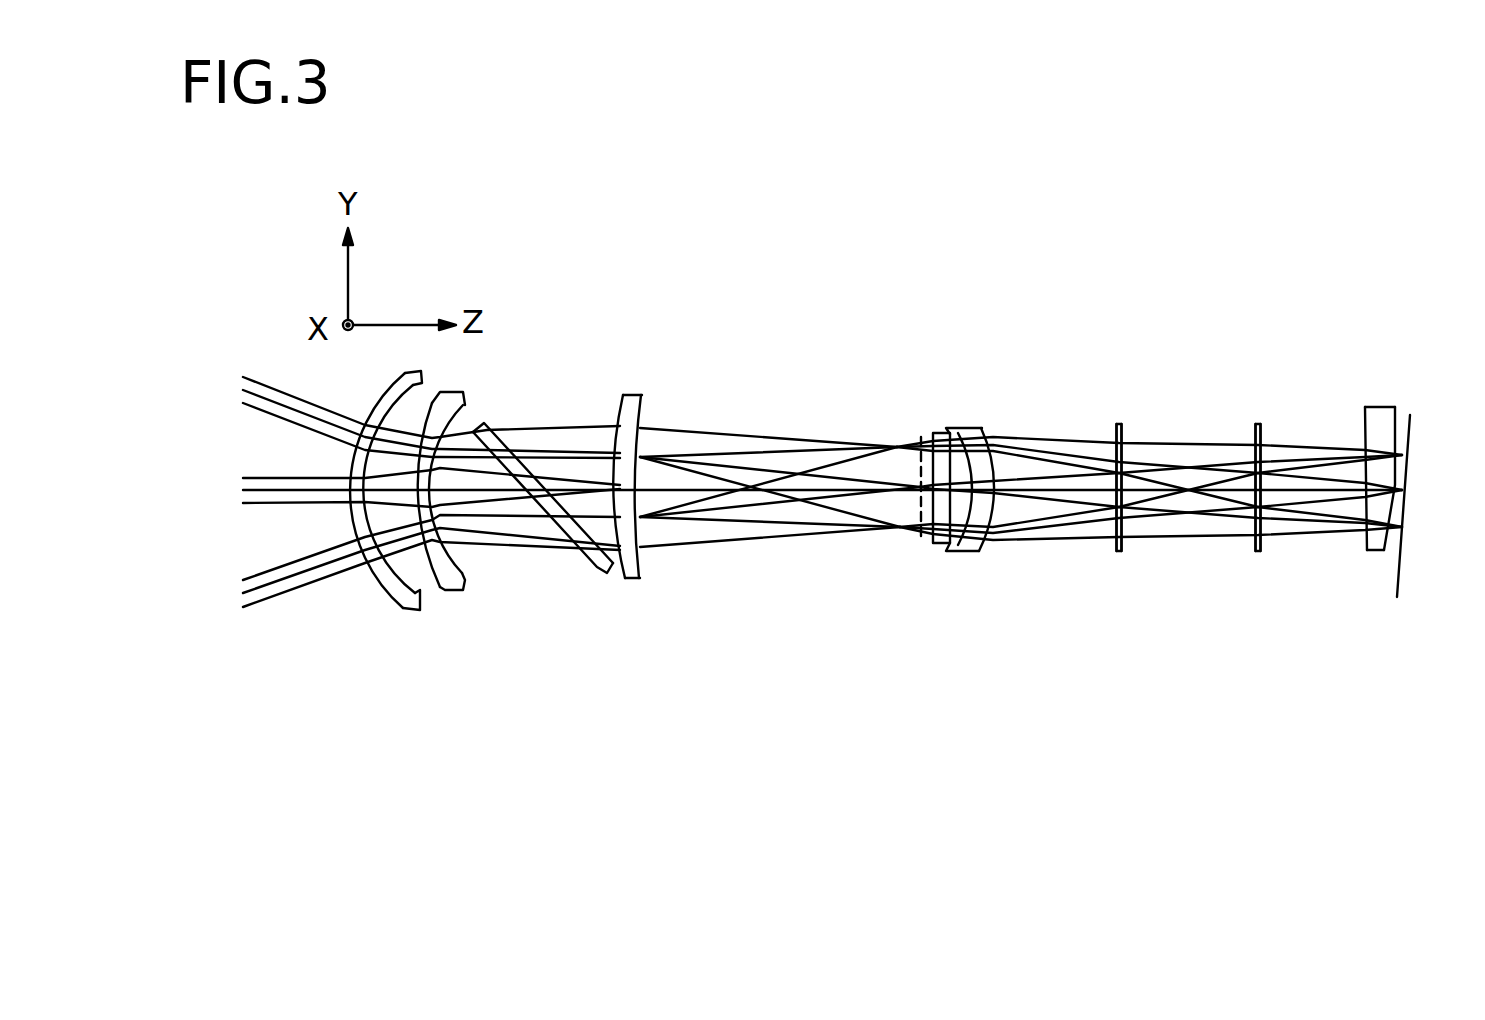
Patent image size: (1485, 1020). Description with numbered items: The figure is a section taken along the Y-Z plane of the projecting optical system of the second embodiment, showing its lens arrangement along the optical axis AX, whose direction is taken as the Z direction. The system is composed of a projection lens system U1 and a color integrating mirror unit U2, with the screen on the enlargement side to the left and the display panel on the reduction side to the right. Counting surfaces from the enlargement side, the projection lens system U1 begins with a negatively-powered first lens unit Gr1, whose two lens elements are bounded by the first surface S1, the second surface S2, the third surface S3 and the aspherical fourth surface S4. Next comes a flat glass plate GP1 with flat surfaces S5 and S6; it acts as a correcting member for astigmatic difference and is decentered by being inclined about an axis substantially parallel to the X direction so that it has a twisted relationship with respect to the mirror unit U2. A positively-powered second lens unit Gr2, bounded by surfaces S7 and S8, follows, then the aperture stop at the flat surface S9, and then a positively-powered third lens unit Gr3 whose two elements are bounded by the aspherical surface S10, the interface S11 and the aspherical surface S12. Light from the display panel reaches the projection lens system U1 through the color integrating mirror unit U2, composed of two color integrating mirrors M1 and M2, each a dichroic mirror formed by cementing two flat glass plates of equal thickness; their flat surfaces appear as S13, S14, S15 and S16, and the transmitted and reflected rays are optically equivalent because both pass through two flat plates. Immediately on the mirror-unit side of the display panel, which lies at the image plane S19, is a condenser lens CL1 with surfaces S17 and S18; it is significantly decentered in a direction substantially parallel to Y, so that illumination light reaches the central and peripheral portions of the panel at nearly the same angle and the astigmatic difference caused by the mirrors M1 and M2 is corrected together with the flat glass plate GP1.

The optical axis AX is at (297, 490).
The first surface S1 is at (405, 375).
The second surface S2 is at (423, 384).
The third surface S3 is at (463, 392).
The fourth surface S4 is at (447, 418).
The fifth surface S5 is at (590, 560).
The sixth surface S6 is at (484, 424).
The flat glass plate GP1 is at (543, 518).
The seventh surface S7 is at (624, 395).
The eighth surface S8 is at (642, 405).
The aperture stop surface S9 is at (917, 540).
The tenth surface S10 is at (933, 433).
The eleventh surface S11 is at (962, 548).
The twelfth surface S12 is at (983, 432).
The thirteenth surface S13 is at (1118, 424).
The fourteenth surface S14 is at (1124, 427).
The fifteenth surface S15 is at (1257, 425).
The sixteenth surface S16 is at (1263, 428).
The seventeenth surface S17 is at (1365, 410).
The eighteenth surface S18 is at (1399, 412).
The image plane surface S19 is at (1397, 597).
The first lens unit Gr1 is at (451, 500).
The second lens unit Gr2 is at (667, 496).
The third lens unit Gr3 is at (936, 510).
The projection lens system U1 is at (673, 519).
The color integrating mirror unit U2 is at (1197, 527).
The color integrating mirror M1 is at (1263, 478).
The color integrating mirror M2 is at (1131, 479).
The condenser lens CL1 is at (1373, 458).